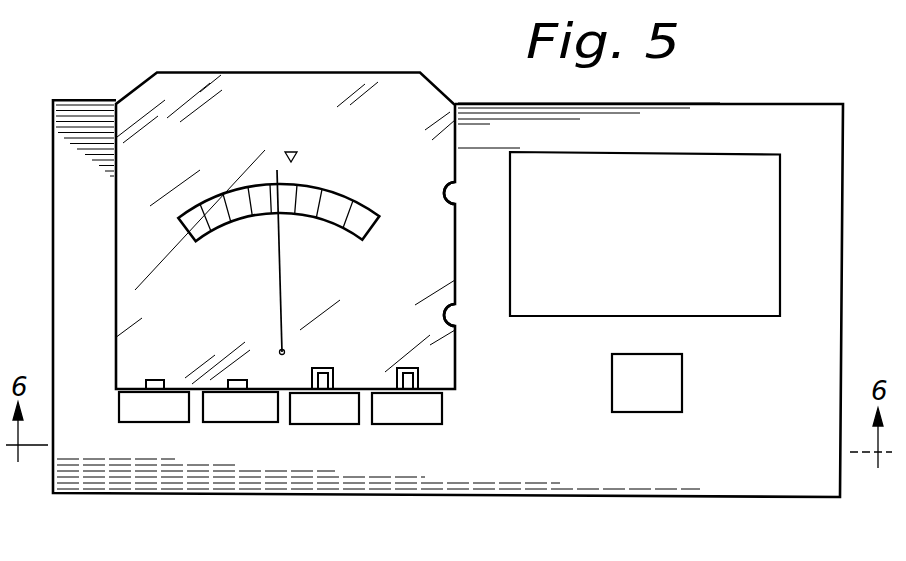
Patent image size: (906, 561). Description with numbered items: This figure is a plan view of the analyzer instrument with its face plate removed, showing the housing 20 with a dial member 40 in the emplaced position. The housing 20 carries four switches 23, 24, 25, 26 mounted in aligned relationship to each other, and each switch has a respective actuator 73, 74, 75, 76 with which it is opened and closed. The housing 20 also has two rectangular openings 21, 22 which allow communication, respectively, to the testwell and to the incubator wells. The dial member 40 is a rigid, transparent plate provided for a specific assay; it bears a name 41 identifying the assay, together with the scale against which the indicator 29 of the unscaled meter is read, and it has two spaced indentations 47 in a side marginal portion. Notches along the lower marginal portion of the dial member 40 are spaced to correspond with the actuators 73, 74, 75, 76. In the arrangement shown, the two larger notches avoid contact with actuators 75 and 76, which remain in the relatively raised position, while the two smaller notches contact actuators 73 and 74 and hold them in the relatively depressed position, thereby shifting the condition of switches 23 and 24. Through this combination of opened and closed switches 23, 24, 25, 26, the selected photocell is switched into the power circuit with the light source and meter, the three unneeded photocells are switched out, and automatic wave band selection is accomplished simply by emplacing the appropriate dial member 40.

The housing 20 is at (63, 192).
The rectangular opening 21 is at (625, 410).
The rectangular opening 22 is at (770, 196).
The switch 23 is at (180, 422).
The switch 24 is at (275, 422).
The switch 25 is at (343, 424).
The switch 26 is at (427, 424).
The indicator 29 is at (275, 198).
The dial member 40 is at (415, 40).
The name 41 is at (267, 91).
The indentation 47 is at (452, 321).
The actuator 73 is at (155, 391).
The actuator 74 is at (239, 391).
The actuator 75 is at (323, 390).
The actuator 76 is at (408, 390).